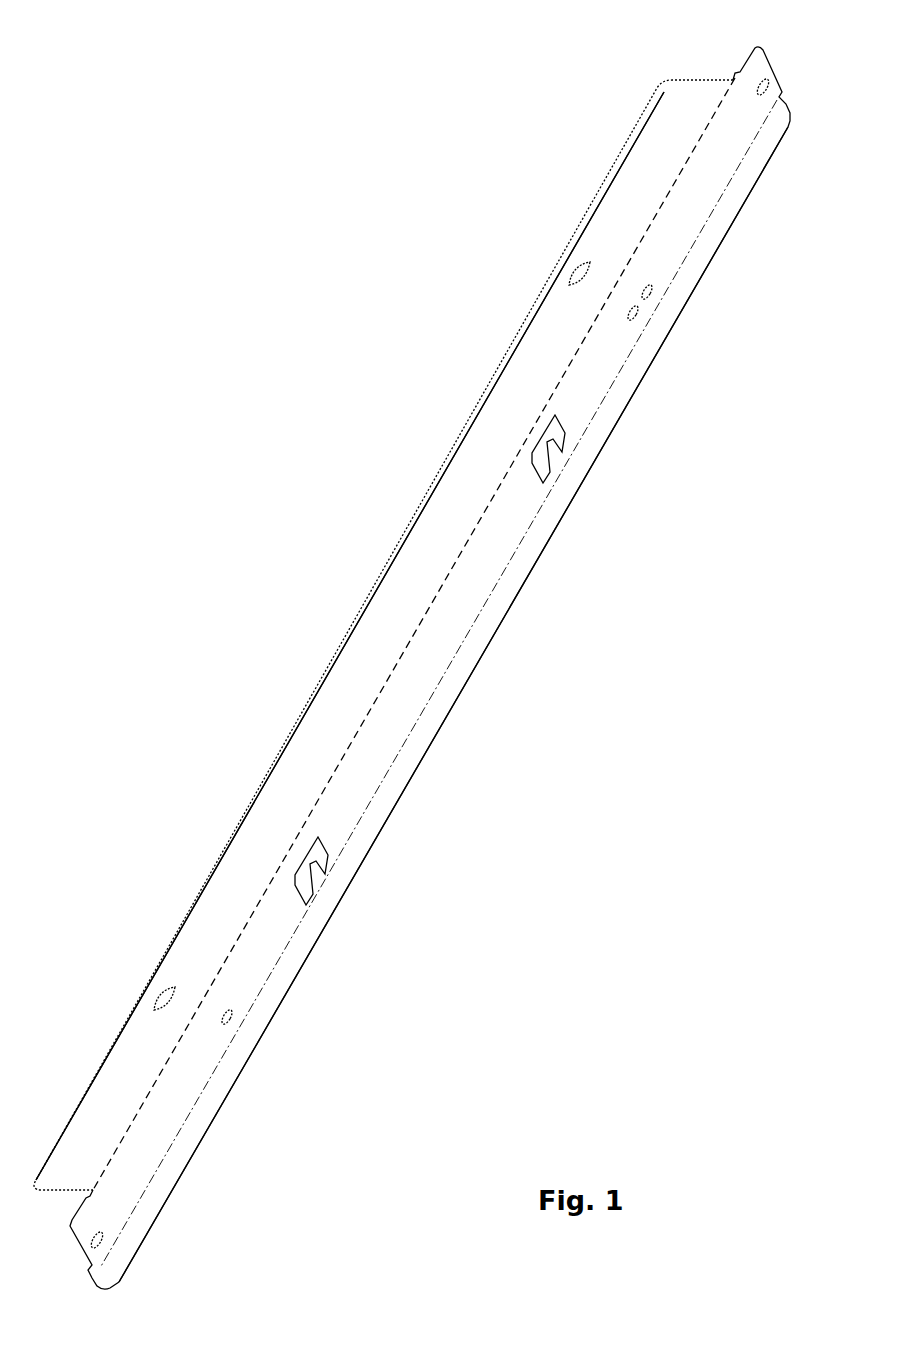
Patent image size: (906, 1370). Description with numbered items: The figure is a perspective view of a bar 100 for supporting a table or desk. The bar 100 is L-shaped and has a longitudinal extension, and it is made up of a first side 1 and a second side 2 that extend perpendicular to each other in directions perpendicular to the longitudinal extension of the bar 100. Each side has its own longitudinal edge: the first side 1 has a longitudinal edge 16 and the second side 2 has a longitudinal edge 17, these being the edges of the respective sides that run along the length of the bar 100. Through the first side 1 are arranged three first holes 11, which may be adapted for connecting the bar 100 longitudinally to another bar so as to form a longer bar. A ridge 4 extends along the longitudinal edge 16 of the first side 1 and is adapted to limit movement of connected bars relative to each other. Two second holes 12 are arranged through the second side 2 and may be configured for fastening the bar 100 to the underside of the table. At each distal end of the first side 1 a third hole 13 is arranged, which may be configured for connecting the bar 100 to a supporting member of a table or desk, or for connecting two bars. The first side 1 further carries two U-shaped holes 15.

The bar 100 is at (118, 500).
The first side 1 is at (445, 638).
The second side 2 is at (305, 728).
The ridge 4 is at (400, 770).
The first holes 11 is at (638, 314).
The second holes 12 is at (576, 273).
The third hole 13 is at (762, 78).
The U-shaped holes 15 is at (560, 437).
The longitudinal edge 16 is at (447, 718).
The longitudinal edge 17 is at (227, 847).